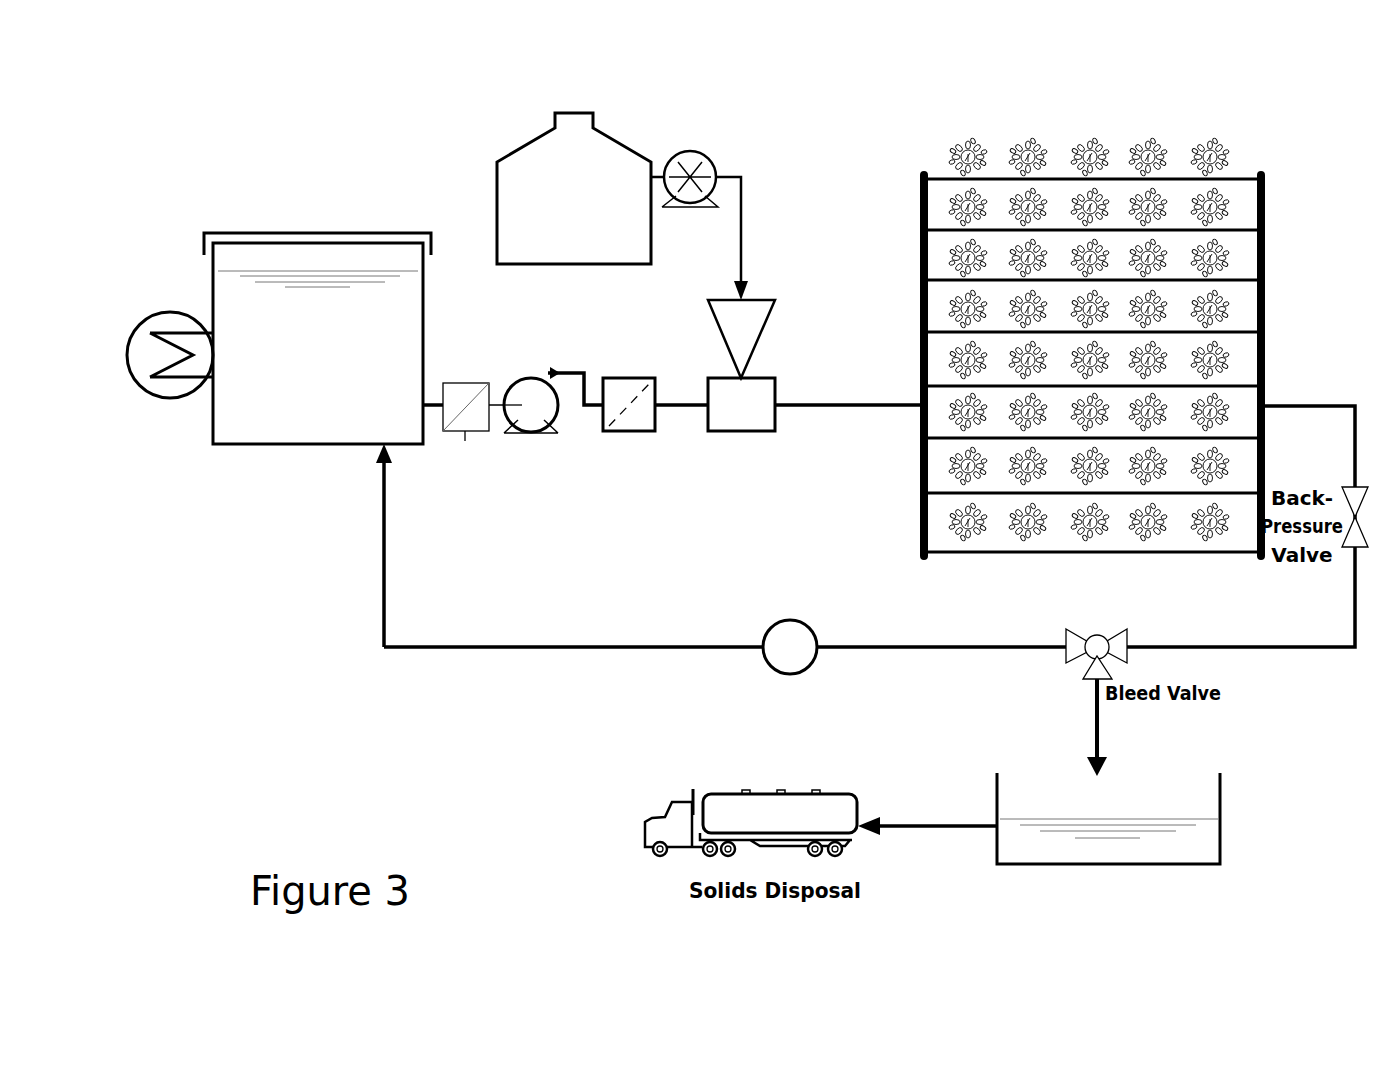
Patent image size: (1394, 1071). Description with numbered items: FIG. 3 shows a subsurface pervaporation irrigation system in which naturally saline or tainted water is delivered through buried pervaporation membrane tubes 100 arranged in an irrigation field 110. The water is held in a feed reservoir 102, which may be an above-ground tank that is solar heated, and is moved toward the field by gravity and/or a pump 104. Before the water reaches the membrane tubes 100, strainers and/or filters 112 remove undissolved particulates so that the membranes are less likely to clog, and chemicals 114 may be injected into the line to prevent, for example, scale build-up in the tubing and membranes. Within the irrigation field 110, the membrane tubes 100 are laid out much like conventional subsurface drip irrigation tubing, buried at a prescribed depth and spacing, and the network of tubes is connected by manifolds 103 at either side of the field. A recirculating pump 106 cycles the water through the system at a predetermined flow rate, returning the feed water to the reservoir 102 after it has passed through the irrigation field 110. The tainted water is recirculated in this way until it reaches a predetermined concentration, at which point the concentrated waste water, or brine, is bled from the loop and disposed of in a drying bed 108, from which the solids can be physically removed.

The pervaporation membrane tube 100 is at (1240, 278).
The feed reservoir 102 is at (230, 305).
The manifold 103 is at (924, 257).
The pump 104 is at (538, 433).
The recirculating pump 106 is at (788, 636).
The drying bed 108 is at (1222, 832).
The irrigation field 110 is at (1105, 293).
The strainers and/or filters 112 is at (458, 383).
The chemicals 114 is at (618, 147).